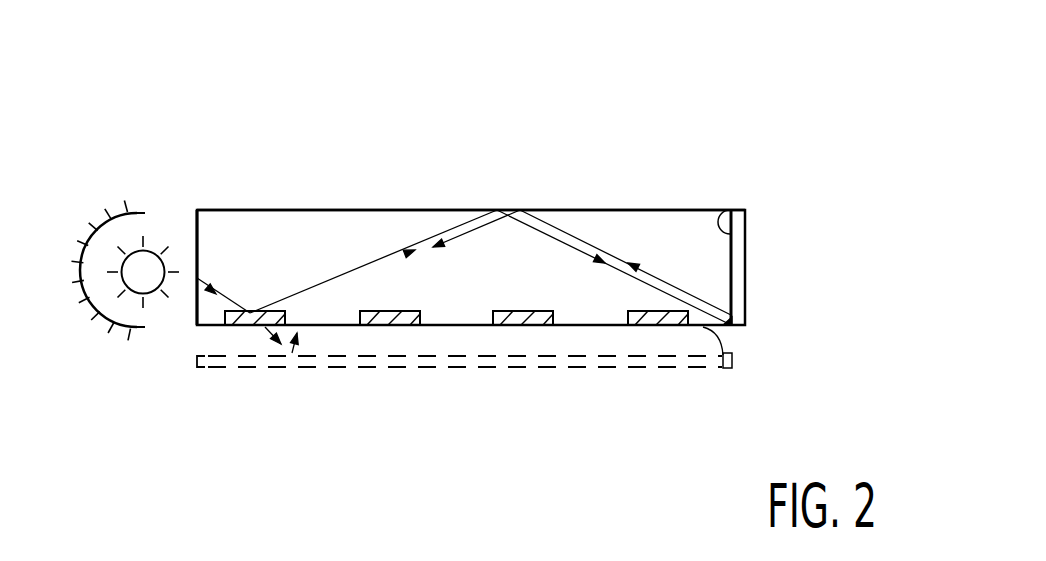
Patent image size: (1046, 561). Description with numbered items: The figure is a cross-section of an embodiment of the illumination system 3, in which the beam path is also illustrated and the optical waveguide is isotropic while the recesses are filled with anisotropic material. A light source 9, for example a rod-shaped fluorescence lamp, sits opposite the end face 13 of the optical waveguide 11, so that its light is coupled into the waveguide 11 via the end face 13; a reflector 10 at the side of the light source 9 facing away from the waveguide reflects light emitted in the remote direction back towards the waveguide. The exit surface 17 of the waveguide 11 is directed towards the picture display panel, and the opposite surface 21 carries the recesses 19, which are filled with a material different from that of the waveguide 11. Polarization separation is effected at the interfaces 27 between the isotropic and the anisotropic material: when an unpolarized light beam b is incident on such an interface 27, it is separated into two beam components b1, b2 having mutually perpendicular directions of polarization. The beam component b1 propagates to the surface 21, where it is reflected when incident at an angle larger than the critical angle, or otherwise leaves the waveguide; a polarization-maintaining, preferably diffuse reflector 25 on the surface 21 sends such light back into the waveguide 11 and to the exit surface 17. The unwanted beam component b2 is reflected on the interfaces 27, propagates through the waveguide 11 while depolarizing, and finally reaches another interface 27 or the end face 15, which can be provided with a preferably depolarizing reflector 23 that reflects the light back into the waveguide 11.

The illumination system 3 is at (700, 107).
The light source 9 is at (150, 284).
The reflector 10 is at (123, 328).
The optical waveguide 11 is at (698, 223).
The end face 13 is at (196, 232).
The end face 15 is at (732, 211).
The exit surface 17 is at (362, 209).
The recesses 19 is at (513, 313).
The surface 21 is at (732, 366).
The reflector 23 is at (741, 303).
The reflector 25 is at (655, 370).
The interfaces 27 is at (285, 311).
The unpolarized light beam b is at (218, 293).
The beam component b1 is at (278, 352).
The beam component b2 is at (409, 249).